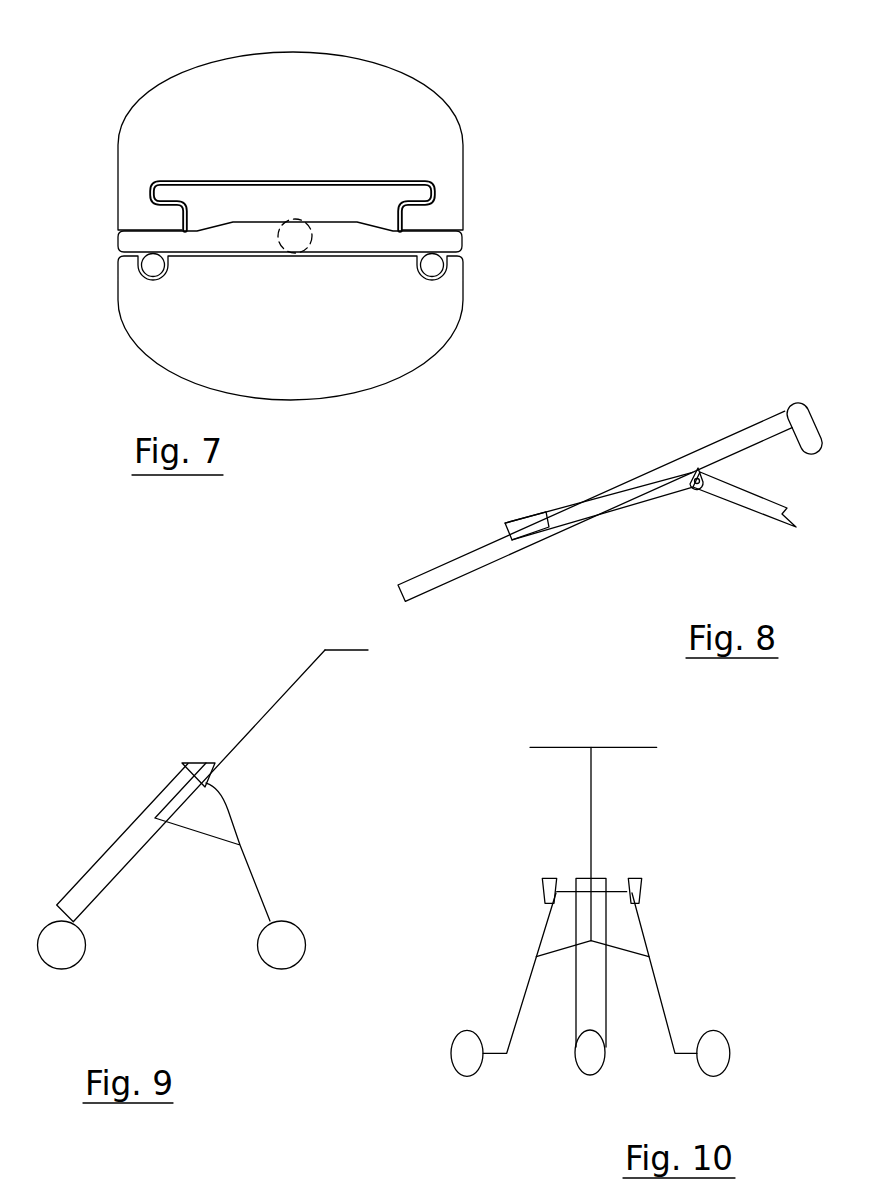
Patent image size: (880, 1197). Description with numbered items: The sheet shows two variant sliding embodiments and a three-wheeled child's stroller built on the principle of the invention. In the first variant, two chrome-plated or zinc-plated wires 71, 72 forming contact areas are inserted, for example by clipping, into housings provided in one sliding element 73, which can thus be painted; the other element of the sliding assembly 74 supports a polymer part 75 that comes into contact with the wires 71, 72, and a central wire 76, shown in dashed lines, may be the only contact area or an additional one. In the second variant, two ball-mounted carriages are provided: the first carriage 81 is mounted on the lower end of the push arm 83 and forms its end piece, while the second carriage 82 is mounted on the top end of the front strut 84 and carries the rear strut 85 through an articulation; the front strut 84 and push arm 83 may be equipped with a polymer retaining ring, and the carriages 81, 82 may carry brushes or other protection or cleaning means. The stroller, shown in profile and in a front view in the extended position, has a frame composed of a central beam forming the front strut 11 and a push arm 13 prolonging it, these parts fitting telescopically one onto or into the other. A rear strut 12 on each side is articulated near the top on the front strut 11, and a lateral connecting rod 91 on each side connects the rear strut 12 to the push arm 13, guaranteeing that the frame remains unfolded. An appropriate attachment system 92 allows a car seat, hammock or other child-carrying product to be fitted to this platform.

In FIG. 9, the front strut 11 is at (112, 847).
In FIG. 10, the front strut 11 is at (592, 897).
In FIG. 9, the rear strut 12 is at (249, 858).
In FIG. 10, the rear strut 12 is at (542, 935).
In FIG. 9, the push arm 13 is at (352, 648).
In FIG. 7, the chrome-plated or zinc-plated wire 71 is at (152, 269).
In FIG. 7, the chrome-plated or zinc-plated wire 72 is at (440, 270).
In FIG. 7, the sliding element 73 is at (413, 319).
In FIG. 7, the other element of the sliding assembly 74 is at (408, 107).
In FIG. 7, the polymer part 75 is at (450, 238).
In FIG. 7, the central wire 76 is at (296, 251).
In FIG. 8, the first carriage 81 is at (526, 520).
In FIG. 8, the second carriage 82 is at (682, 497).
In FIG. 8, the push arm 83 is at (686, 455).
In FIG. 8, the front strut 84 is at (480, 558).
In FIG. 8, the rear strut 85 is at (757, 506).
In FIG. 9, the lateral connecting rod 91 is at (208, 835).
In FIG. 10, the lateral connecting rod 91 is at (532, 977).
In FIG. 9, the attachment system 92 is at (197, 763).
In FIG. 10, the attachment system 92 is at (550, 877).